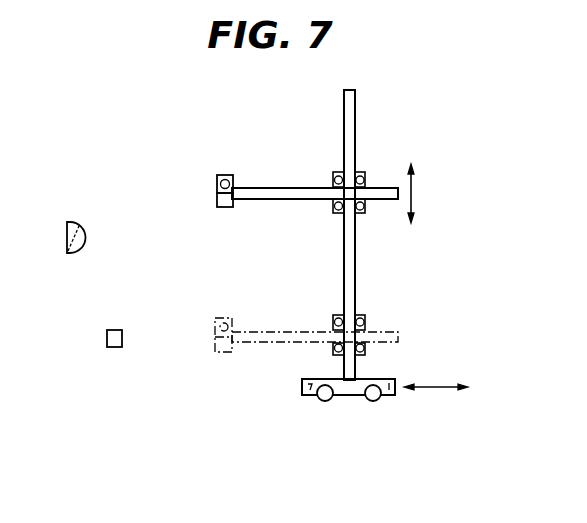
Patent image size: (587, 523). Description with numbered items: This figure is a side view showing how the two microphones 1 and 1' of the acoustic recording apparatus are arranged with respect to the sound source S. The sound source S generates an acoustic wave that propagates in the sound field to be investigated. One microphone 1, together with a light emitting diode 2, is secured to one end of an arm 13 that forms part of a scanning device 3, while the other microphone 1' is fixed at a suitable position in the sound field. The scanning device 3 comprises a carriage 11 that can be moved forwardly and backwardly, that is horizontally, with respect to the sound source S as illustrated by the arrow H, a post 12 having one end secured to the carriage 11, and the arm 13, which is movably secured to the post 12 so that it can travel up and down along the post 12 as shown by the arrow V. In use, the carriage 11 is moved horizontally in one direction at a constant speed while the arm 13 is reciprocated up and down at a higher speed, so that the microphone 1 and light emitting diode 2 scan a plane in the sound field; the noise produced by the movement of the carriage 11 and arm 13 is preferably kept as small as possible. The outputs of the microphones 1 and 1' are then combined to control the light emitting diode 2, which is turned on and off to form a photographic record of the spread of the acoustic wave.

The microphone 1 is at (205, 221).
The microphone 1' is at (117, 364).
The light emitting diode 2 is at (218, 177).
The scanning device 3 is at (393, 275).
The carriage 11 is at (352, 397).
The post 12 is at (355, 152).
The arm 13 is at (285, 187).
The sound source S is at (75, 222).
The arrow V is at (411, 193).
The arrow H is at (442, 387).